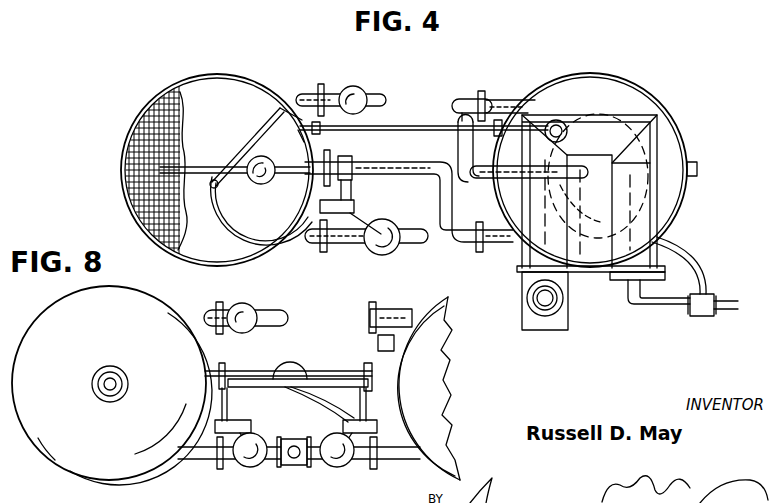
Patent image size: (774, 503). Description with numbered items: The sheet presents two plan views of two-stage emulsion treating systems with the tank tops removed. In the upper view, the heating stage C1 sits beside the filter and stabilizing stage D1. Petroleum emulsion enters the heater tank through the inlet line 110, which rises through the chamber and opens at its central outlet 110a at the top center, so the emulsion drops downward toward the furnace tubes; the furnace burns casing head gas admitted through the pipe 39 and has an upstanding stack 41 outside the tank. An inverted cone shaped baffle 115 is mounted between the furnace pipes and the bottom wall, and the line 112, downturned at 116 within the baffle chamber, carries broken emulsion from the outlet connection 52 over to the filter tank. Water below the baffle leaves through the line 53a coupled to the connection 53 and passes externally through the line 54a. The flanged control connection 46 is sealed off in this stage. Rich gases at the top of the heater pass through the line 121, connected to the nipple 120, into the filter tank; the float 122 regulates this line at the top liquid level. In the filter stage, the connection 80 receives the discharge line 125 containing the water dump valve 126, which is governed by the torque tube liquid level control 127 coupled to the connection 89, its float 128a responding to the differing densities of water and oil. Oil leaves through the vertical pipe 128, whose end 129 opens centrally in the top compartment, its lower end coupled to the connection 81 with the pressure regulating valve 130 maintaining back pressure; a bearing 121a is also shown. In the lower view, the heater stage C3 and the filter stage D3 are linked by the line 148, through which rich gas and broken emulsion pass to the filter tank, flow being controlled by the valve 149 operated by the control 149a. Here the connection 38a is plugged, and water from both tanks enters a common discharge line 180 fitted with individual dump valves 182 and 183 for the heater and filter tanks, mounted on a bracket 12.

In FIG. 4, the filter and stabilizing stage D1 is at (215, 74).
In FIG. 4, the discharge line 125 is at (243, 217).
In FIG. 4, the float 128a is at (258, 184).
In FIG. 4, the vertical pipe 128 is at (270, 106).
In FIG. 4, the end 129 is at (238, 141).
In FIG. 4, the rod bearing 121a is at (304, 140).
In FIG. 4, the connection 81 is at (293, 98).
In FIG. 8, the connection 81 is at (220, 310).
In FIG. 4, the pressure regulating valve 130 is at (349, 100).
In FIG. 8, the pressure regulating valve 130 is at (245, 312).
In FIG. 4, the line 121 is at (418, 118).
In FIG. 4, the connection 89 is at (330, 157).
In FIG. 8, the connection 89 is at (220, 368).
In FIG. 4, the line 112 is at (415, 177).
In FIG. 4, the torque tube liquid level control 127 is at (353, 205).
In FIG. 4, the water dump valve 126 is at (386, 247).
In FIG. 4, the connection 80 is at (311, 243).
In FIG. 8, the connection 80 is at (200, 462).
In FIG. 4, the tubular flanged control connection 46 is at (485, 188).
In FIG. 8, the tubular flanged control connection 46 is at (366, 376).
In FIG. 4, the outlet connection 52 is at (485, 252).
In FIG. 8, the outlet connection 52 is at (400, 462).
In FIG. 4, the inlet line 110 is at (458, 148).
In FIG. 4, the central outlet 110a is at (529, 182).
In FIG. 4, the line 54a is at (470, 102).
In FIG. 4, the nipple 120 is at (457, 118).
In FIG. 4, the outlet connection 53 is at (494, 102).
In FIG. 8, the outlet connection 53 is at (403, 311).
In FIG. 4, the heating stage C1 is at (615, 78).
In FIG. 4, the inverted cone shaped baffle 115 is at (599, 109).
In FIG. 4, the line 53a is at (652, 98).
In FIG. 4, the float 122 is at (572, 108).
In FIG. 4, the downturned portion 116 is at (573, 223).
In FIG. 4, the upstanding stack 41 is at (563, 298).
In FIG. 4, the pipe 39 is at (676, 308).
In FIG. 8, the filter stage D3 is at (125, 306).
In FIG. 8, the valve 149 is at (289, 376).
In FIG. 8, the line 148 is at (322, 378).
In FIG. 8, the connection 38a is at (378, 343).
In FIG. 8, the heater stage C3 is at (432, 366).
In FIG. 8, the bracket 12 is at (245, 428).
In FIG. 8, the control 149a is at (331, 419).
In FIG. 8, the dump valve 183 is at (249, 464).
In FIG. 8, the common discharge line 180 is at (296, 466).
In FIG. 8, the dump valve 182 is at (338, 466).